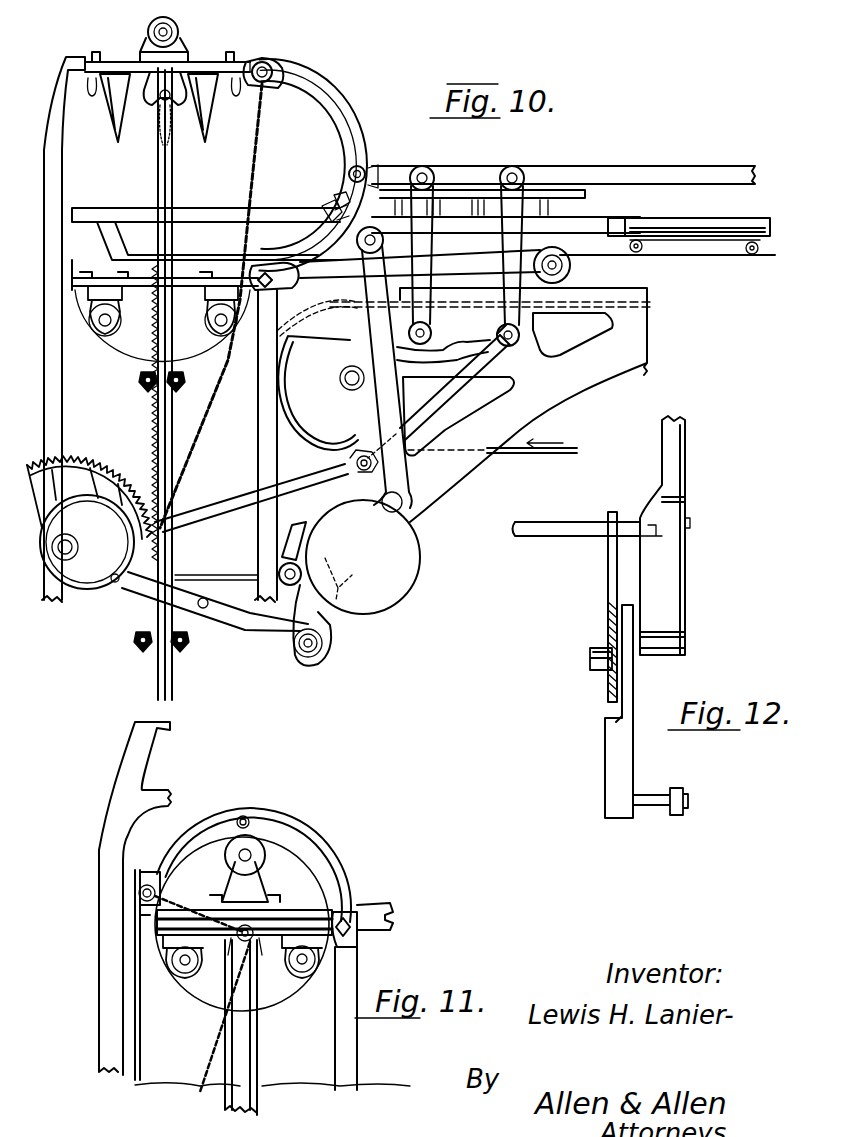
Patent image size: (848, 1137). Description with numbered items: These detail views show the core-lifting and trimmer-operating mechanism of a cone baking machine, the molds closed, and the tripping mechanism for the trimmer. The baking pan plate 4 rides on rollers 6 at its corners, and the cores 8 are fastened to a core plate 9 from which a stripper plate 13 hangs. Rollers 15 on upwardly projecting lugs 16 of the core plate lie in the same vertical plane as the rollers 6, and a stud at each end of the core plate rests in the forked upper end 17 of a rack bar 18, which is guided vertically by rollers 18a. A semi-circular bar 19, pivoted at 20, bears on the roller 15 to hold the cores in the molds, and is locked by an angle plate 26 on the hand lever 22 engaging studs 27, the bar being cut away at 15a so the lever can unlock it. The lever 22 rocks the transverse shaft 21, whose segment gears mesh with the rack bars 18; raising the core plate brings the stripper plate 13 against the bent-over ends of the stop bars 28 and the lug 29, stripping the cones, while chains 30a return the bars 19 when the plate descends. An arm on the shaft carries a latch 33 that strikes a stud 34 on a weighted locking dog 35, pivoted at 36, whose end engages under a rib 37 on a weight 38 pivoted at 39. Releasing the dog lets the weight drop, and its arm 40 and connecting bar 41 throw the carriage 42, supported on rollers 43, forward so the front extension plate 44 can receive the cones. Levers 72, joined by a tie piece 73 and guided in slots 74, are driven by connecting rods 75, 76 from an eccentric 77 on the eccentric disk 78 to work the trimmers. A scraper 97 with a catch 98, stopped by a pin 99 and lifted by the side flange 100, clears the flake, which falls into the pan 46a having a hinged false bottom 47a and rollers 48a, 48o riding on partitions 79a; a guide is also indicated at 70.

In FIG. 10, the plate 4 is at (138, 300).
In FIG. 11, the plate 4 is at (160, 938).
In FIG. 10, the rollers 6 is at (98, 332).
In FIG. 11, the rollers 6 is at (186, 975).
In FIG. 10, the cores 8 is at (114, 108).
In FIG. 10, the core plate 9 is at (211, 61).
In FIG. 10, the stripper plate 13 is at (216, 72).
In FIG. 10, the rollers 15 is at (178, 24).
In FIG. 11, the rollers 15 is at (262, 852).
In FIG. 11, the cut-away portion 15a is at (250, 840).
In FIG. 11, the lugs 16 is at (250, 884).
In FIG. 10, the forked upper end 17 is at (176, 118).
In FIG. 11, the forked upper end 17 is at (240, 948).
In FIG. 10, the rack bars 18 is at (160, 203).
In FIG. 11, the rack bars 18 is at (240, 1062).
In FIG. 10, the rollers 18a is at (140, 382).
In FIG. 10, the semi-circular bar 19 is at (338, 110).
In FIG. 11, the semi-circular bar 19 is at (318, 858).
In FIG. 11, the pivot 20 is at (352, 928).
In FIG. 10, the transverse shaft 21 is at (68, 560).
In FIG. 11, the hand lever 22 is at (100, 980).
In FIG. 11, the angle plate 26 is at (142, 870).
In FIG. 11, the studs 27 is at (157, 894).
In FIG. 10, the stop bars 28 is at (56, 115).
In FIG. 11, the stop bars 28 is at (128, 776).
In FIG. 10, the lug 29 is at (263, 63).
In FIG. 10, the chains 30a is at (198, 436).
In FIG. 10, the latch 33 is at (264, 622).
In FIG. 10, the stud 34 is at (316, 652).
In FIG. 12, the stud 34 is at (642, 808).
In FIG. 10, the locking dog 35 is at (318, 612).
In FIG. 12, the locking dog 35 is at (620, 748).
In FIG. 10, the pivot 36 is at (280, 570).
In FIG. 12, the pivot 36 is at (590, 660).
In FIG. 10, the rib 37 is at (348, 577).
In FIG. 12, the rib 37 is at (622, 568).
In FIG. 10, the weight 38 is at (421, 570).
In FIG. 12, the weight 38 is at (668, 574).
In FIG. 10, the pivot 39 is at (404, 503).
In FIG. 12, the pivot 39 is at (690, 522).
In FIG. 10, the arm 40 is at (372, 328).
In FIG. 10, the connecting bar 41 is at (470, 258).
In FIG. 10, the carriage 42 is at (560, 222).
In FIG. 10, the rollers 43 is at (312, 276).
In FIG. 10, the front extension plate 44 is at (271, 220).
In FIG. 10, the pan 46a is at (712, 250).
In FIG. 10, the false bottom 47a is at (698, 225).
In FIG. 10, the rollers 48a is at (640, 240).
In FIG. 10, the rail roller 48o is at (754, 255).
In FIG. 10, the guide rail 70 is at (640, 292).
In FIG. 10, the levers 72 is at (424, 210).
In FIG. 10, the tie piece 73 is at (482, 298).
In FIG. 10, the slots 74 is at (408, 345).
In FIG. 10, the connecting rod 75 is at (458, 392).
In FIG. 10, the connecting rod 76 is at (290, 486).
In FIG. 10, the eccentric 77 is at (112, 505).
In FIG. 10, the eccentric disk 78 is at (95, 520).
In FIG. 10, the partitions 79a is at (695, 292).
In FIG. 10, the scraper 97 is at (336, 195).
In FIG. 10, the catch 98 is at (324, 208).
In FIG. 10, the pin 99 is at (382, 164).
In FIG. 10, the side flange 100 is at (229, 215).